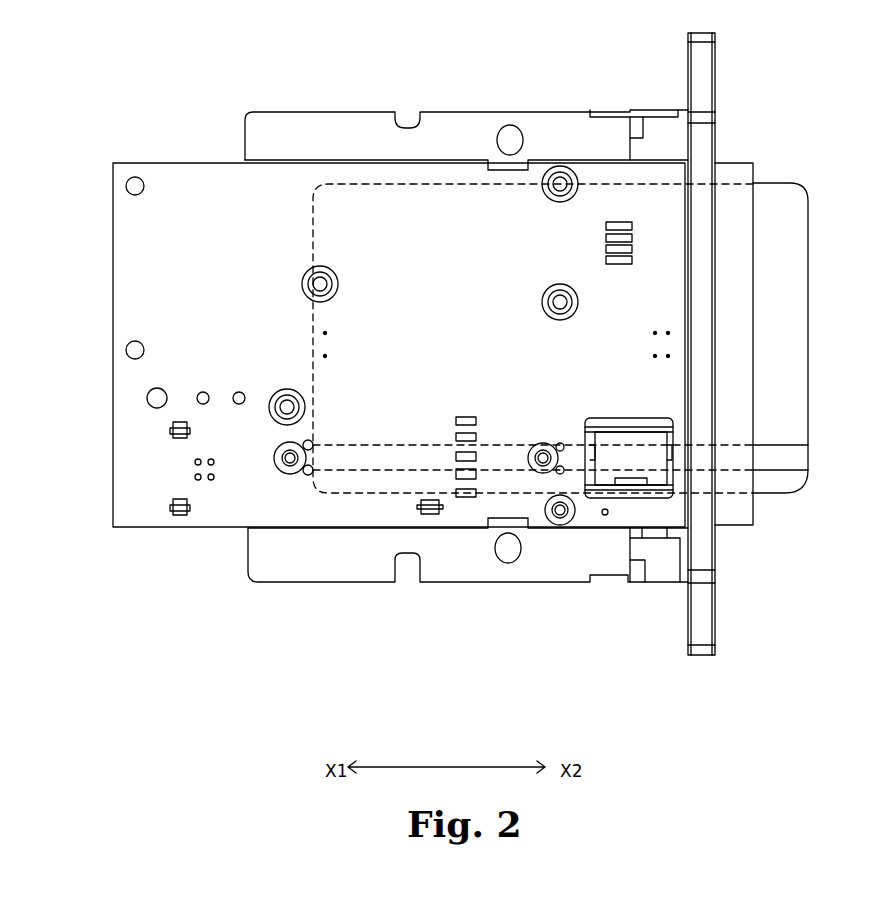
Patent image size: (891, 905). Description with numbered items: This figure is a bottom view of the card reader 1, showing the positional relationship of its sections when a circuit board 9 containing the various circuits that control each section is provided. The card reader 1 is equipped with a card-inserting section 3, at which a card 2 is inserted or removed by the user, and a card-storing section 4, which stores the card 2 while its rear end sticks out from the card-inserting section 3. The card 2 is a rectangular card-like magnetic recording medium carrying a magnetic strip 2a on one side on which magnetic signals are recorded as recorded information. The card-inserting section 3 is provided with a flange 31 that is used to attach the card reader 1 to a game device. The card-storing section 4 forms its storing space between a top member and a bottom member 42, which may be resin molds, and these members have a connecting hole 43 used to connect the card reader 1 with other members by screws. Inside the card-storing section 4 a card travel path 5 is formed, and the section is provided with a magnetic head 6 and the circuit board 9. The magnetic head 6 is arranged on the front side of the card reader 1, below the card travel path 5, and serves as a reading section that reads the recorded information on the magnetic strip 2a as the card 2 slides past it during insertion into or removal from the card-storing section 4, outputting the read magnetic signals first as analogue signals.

The card reader 1 is at (494, 389).
The card 2 is at (782, 483).
The magnetic strip 2a is at (802, 458).
The card-inserting section 3 is at (758, 230).
The flange 31 is at (705, 82).
The card-storing section 4 is at (456, 409).
The bottom member 42 is at (272, 565).
The connecting hole 43 is at (565, 168).
The card travel path 5 is at (475, 203).
The magnetic head 6 is at (607, 478).
The circuit board 9 is at (147, 517).